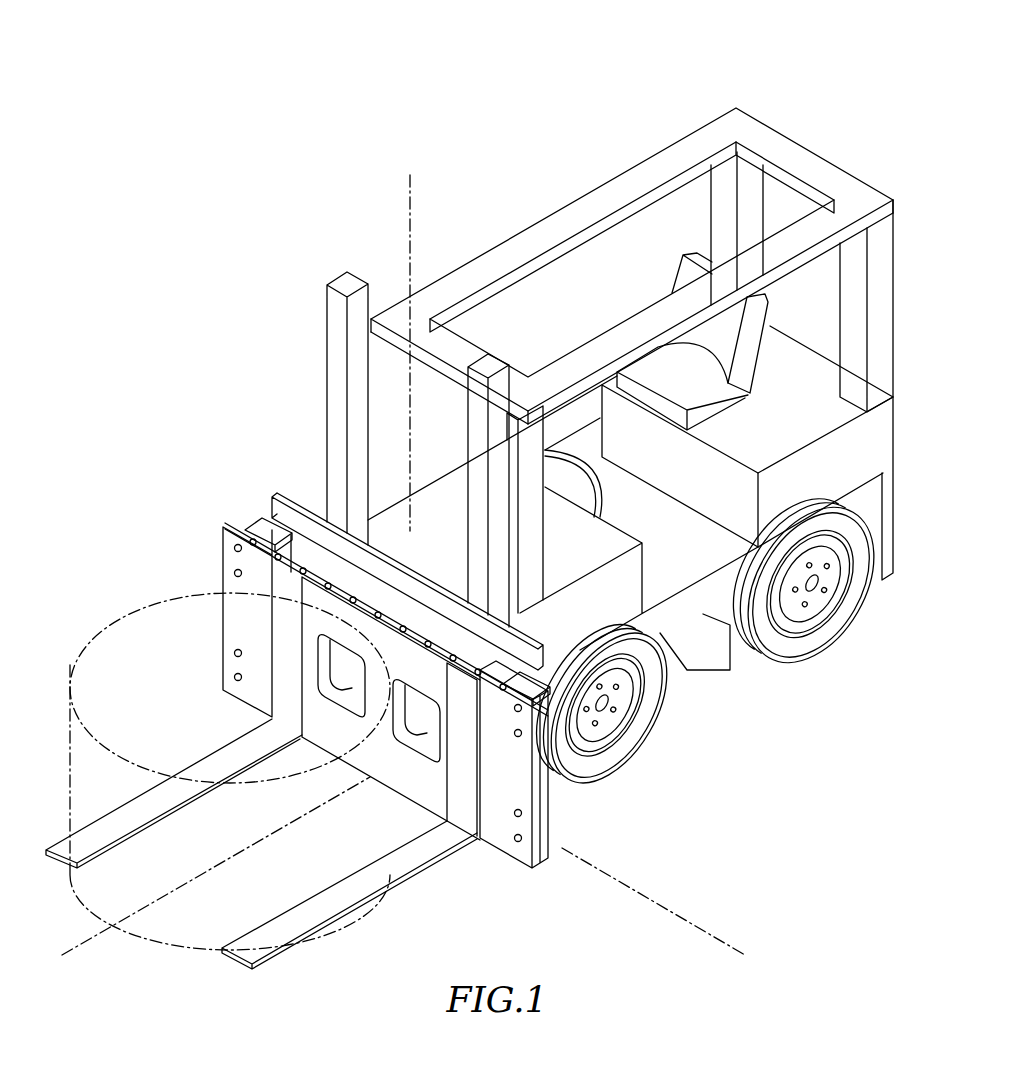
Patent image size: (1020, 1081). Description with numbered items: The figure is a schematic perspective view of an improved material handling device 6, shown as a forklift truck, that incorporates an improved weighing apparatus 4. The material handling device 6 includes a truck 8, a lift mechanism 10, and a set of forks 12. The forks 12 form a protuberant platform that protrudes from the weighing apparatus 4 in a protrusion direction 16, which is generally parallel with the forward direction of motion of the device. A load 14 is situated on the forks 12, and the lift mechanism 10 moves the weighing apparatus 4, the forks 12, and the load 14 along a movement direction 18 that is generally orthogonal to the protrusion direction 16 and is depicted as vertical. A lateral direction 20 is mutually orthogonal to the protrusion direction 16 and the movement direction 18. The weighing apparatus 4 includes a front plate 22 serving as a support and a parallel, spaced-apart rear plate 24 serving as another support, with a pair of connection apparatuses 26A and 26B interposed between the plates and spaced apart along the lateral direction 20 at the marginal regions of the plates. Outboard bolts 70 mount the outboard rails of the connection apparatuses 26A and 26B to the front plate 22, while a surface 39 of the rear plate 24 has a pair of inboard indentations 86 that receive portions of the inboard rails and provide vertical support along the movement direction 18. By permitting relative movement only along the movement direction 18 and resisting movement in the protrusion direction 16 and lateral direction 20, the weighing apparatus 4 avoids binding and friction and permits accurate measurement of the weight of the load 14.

The weighing apparatus 4 is at (408, 725).
The material handling device 6 is at (781, 121).
The truck 8 is at (893, 544).
The lift mechanism 10 is at (332, 352).
The forks 12 is at (231, 977).
The load 14 is at (105, 606).
The protrusion direction 16 is at (105, 931).
The movement direction 18 is at (412, 218).
The lateral direction 20 is at (686, 916).
The front plate 22 is at (496, 834).
The rear plate 24 is at (298, 494).
The connection apparatus 26A is at (250, 518).
The connection apparatus 26B is at (552, 694).
The surface of the rear plate 39 is at (402, 590).
The outboard bolts 70 is at (236, 677).
The inboard indentations 86 is at (288, 518).